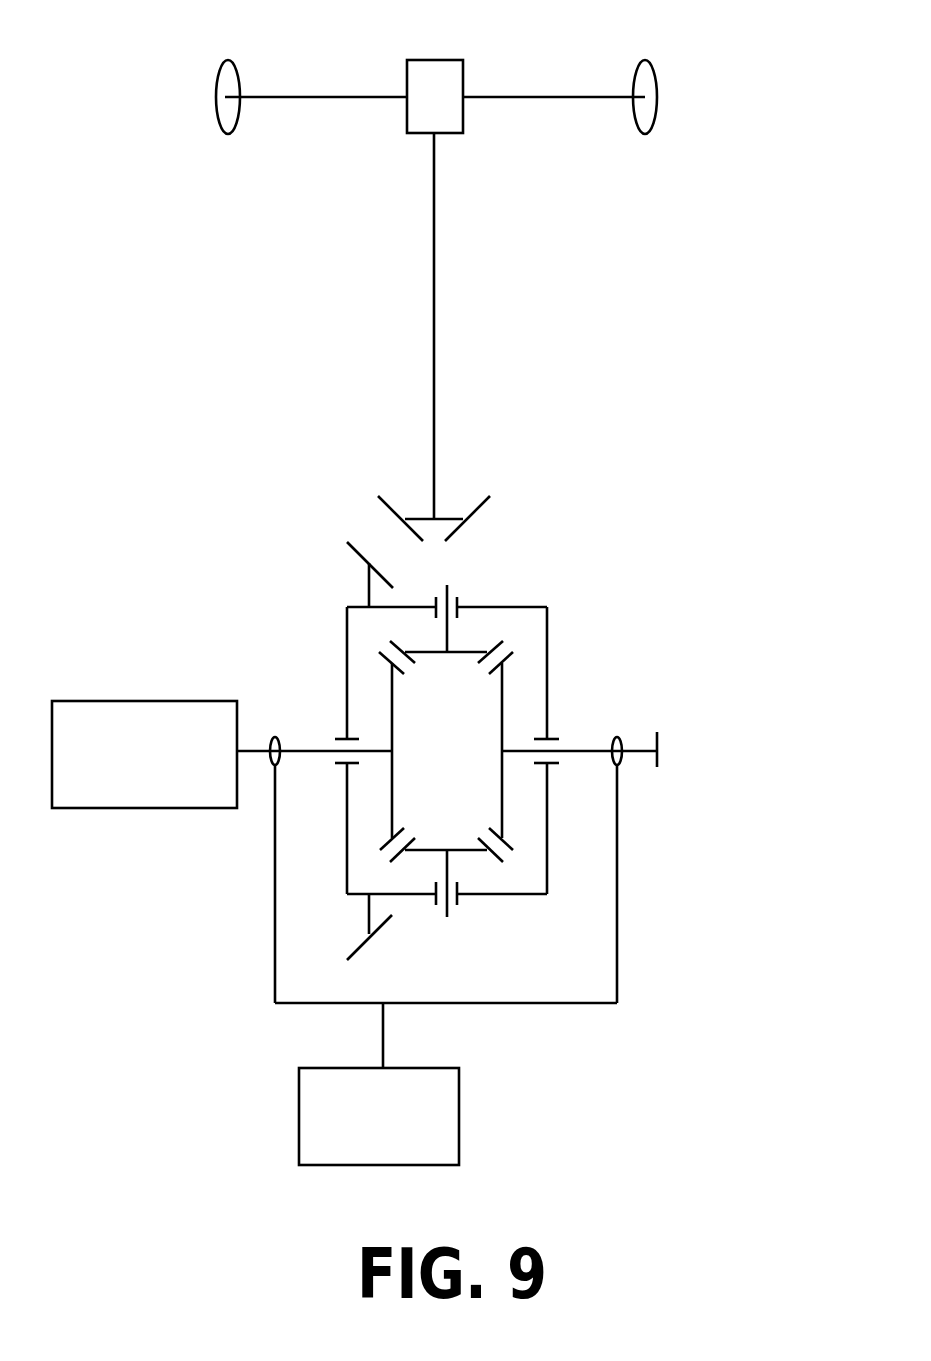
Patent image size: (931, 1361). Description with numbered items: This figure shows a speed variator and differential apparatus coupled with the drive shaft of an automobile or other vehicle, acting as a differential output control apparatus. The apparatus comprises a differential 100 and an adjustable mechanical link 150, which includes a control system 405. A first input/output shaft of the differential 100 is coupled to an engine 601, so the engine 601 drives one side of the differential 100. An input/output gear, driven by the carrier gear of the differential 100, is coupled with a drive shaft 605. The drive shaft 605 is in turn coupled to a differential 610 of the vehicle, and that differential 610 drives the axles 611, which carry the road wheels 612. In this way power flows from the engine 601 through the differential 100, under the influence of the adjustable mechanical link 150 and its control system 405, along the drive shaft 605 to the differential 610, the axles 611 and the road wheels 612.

The road wheels 612 is at (436, 97).
The axles 611 is at (435, 84).
The differential 610 is at (435, 70).
The drive shaft 605 is at (508, 326).
The differential 100 is at (570, 578).
The engine 601 is at (144, 754).
The adjustable mechanical link 150 is at (566, 1029).
The control system 405 is at (379, 1116).